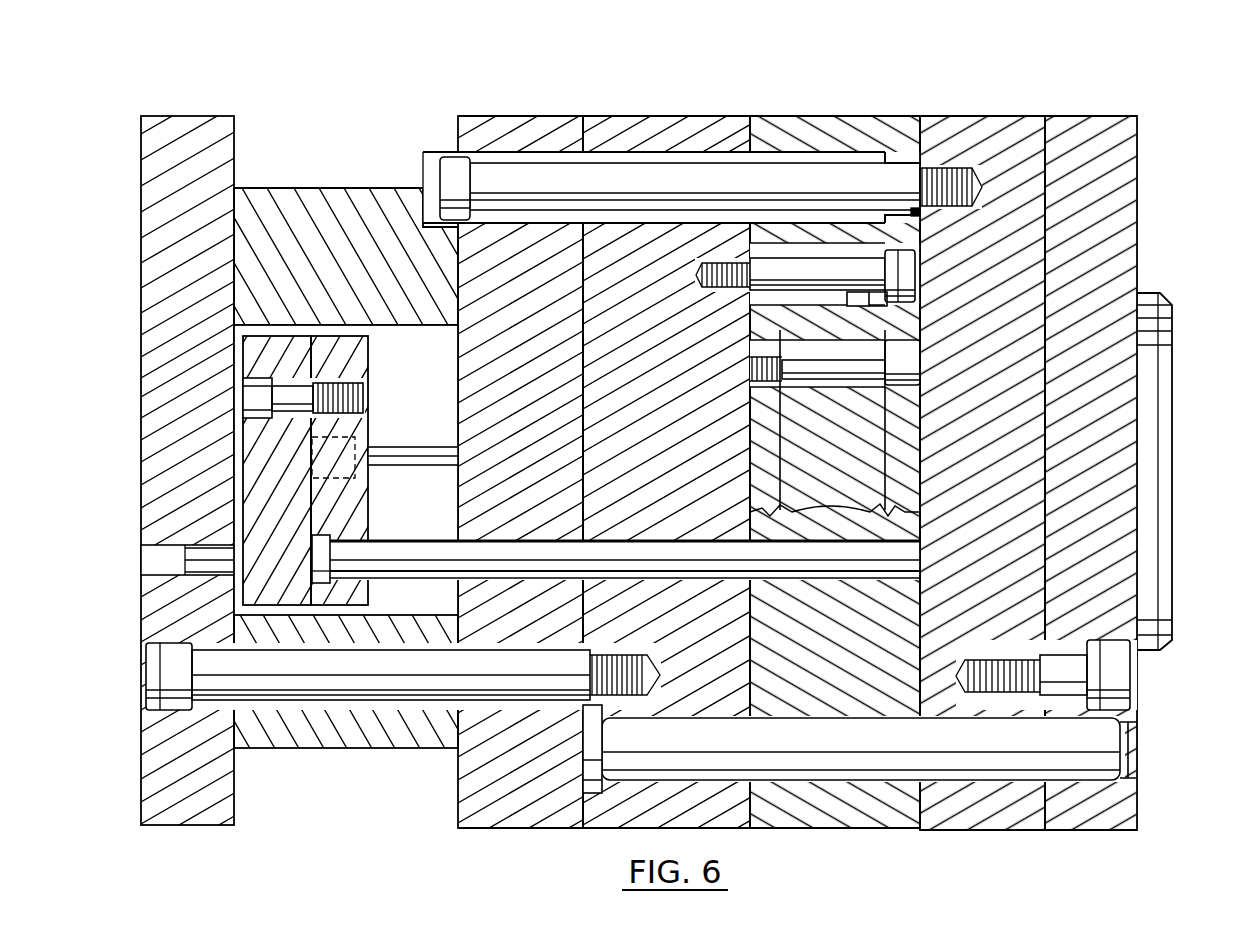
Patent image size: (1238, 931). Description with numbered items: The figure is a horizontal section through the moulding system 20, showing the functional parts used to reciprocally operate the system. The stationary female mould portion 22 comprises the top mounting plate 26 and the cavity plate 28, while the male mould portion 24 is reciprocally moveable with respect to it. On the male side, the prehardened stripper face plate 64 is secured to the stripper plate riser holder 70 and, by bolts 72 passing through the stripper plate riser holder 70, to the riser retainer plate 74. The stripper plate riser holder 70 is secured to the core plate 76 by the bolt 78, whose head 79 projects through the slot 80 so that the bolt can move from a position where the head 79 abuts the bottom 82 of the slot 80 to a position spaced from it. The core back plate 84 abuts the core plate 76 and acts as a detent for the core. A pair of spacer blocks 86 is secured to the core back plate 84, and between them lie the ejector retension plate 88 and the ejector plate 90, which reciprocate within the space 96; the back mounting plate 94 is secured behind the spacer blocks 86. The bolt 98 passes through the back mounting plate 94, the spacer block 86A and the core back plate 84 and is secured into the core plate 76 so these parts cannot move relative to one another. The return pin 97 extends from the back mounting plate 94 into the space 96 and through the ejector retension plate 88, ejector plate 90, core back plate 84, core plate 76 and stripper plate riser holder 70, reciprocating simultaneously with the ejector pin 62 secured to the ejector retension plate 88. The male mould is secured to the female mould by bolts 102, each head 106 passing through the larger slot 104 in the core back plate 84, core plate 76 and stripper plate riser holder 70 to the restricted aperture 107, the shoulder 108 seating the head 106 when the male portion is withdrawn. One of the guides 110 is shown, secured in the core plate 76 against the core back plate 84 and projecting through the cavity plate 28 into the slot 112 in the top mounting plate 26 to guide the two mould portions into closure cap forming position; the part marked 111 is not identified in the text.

The moulding system 20 is at (899, 70).
The female mould portion 22 is at (1012, 97).
The male mould portion 24 is at (790, 96).
The top mounting plate 26 is at (1091, 473).
The cavity plate 28 is at (982, 473).
The ejector pin 62 is at (440, 430).
The prehardened stripper face plate 64 is at (898, 481).
The stripper plate riser holder 70 is at (835, 472).
The bolts 72 is at (922, 370).
The riser retainer plate 74 is at (776, 478).
The core plate 76 is at (666, 477).
The bolt 78 is at (826, 243).
The head 79 is at (905, 270).
The slot 80 is at (890, 305).
The bottom 82 is at (848, 300).
The core back plate 84 is at (520, 479).
The spacer blocks 86 is at (344, 419).
The spacer block 86A is at (357, 724).
The ejector retension plate 88 is at (343, 470).
The ejector plate 90 is at (285, 470).
The back mounting plate 94 is at (192, 475).
The space 96 is at (346, 470).
The return pin 97 is at (626, 552).
The bolt 98 is at (403, 676).
The bolts 102 is at (702, 187).
The slot 104 is at (626, 222).
The head 106 is at (440, 185).
The restricted aperture 107 is at (922, 215).
The shoulder 108 is at (903, 150).
The guides 110 is at (863, 749).
The leader pin head 111 is at (588, 752).
The slot 112 is at (1132, 745).